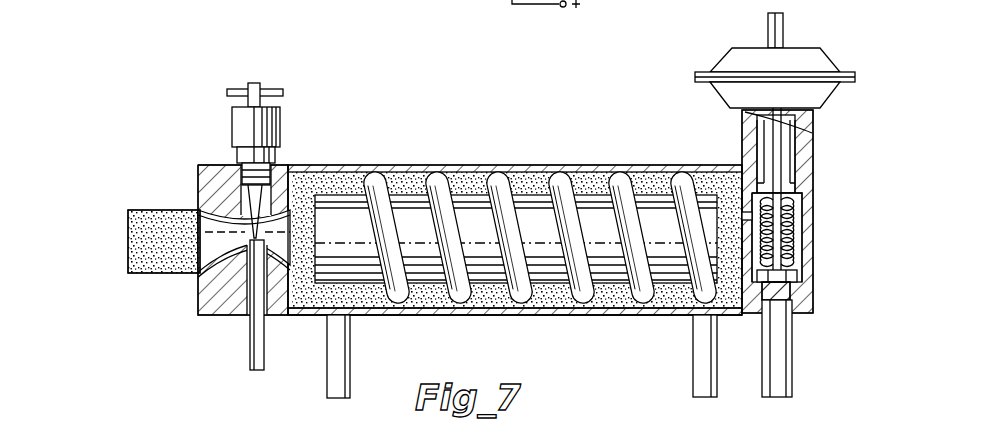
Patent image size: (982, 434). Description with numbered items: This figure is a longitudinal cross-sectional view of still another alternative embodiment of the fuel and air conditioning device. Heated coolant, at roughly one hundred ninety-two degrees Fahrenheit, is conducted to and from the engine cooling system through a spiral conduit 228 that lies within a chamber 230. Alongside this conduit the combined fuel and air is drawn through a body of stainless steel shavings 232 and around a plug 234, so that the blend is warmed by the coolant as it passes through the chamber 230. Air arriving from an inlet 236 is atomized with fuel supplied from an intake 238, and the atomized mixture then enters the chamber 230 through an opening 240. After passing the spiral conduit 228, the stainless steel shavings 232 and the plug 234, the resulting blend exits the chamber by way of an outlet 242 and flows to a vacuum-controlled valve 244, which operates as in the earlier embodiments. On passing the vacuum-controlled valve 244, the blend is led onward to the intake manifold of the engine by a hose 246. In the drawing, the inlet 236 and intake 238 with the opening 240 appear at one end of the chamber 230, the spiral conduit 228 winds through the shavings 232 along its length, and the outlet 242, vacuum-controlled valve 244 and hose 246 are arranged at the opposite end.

The spiral conduit 228 is at (500, 173).
The chamber 230 is at (406, 172).
The body of stainless steel shavings 232 is at (587, 173).
The plug 234 is at (603, 316).
The inlet 236 is at (131, 230).
The intake 238 is at (204, 296).
The opening 240 is at (279, 212).
The outlet 242 is at (742, 174).
The vacuum-controlled valve 244 is at (797, 282).
The hose 246 is at (789, 363).